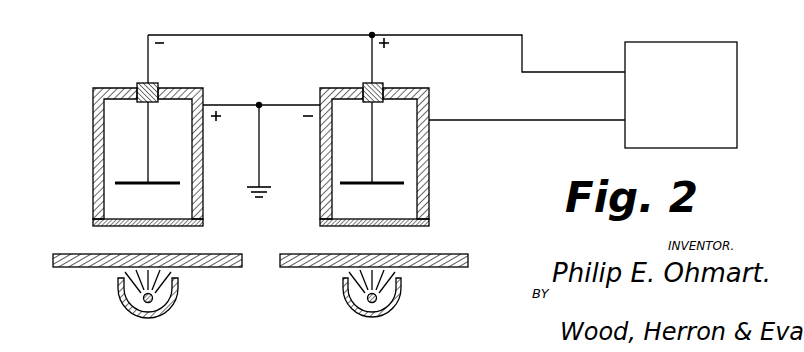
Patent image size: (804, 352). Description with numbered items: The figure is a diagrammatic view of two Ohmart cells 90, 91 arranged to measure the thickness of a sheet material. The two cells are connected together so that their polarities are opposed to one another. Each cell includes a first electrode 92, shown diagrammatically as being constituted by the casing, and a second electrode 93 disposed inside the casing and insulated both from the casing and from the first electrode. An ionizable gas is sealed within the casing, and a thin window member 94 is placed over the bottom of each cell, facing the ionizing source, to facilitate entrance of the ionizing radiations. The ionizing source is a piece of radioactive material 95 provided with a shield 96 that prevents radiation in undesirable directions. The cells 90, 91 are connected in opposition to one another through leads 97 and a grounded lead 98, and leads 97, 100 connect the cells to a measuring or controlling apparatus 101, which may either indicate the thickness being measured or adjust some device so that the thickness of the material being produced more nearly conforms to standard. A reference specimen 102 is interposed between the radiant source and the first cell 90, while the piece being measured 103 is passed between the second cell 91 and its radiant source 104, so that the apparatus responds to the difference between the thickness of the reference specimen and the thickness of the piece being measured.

The Ohmart cell 90 is at (134, 161).
The Ohmart cell 91 is at (429, 162).
The first electrode 92 is at (93, 183).
The second electrode 93 is at (167, 183).
The window member 94 is at (192, 226).
The radioactive material 95 is at (148, 286).
The shield 96 is at (140, 301).
The leads 97 is at (313, 36).
The grounded lead 98 is at (284, 107).
The lead 100 is at (545, 120).
The measuring or controlling apparatus 101 is at (737, 75).
The reference specimen 102 is at (62, 254).
The piece being measured 103 is at (315, 253).
The radiant source 104 is at (398, 270).